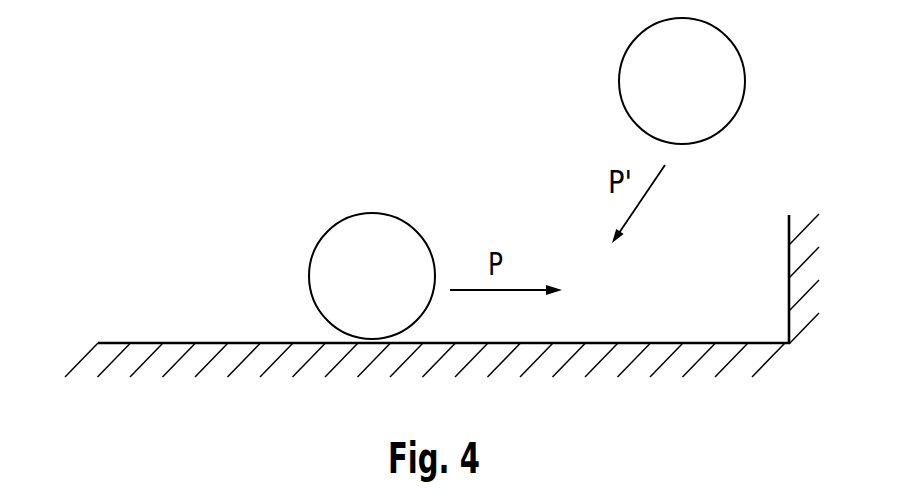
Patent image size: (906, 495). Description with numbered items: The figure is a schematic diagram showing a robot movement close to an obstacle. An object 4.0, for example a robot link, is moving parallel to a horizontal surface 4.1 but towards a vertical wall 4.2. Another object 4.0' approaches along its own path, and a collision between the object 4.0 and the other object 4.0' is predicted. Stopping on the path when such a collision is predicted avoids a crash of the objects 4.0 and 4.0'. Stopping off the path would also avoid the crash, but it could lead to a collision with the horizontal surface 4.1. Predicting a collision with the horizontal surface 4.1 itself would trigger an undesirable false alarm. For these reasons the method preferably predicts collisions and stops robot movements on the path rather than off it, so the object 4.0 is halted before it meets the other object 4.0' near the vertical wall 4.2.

The object 4.0 is at (372, 276).
The another object 4.0' is at (682, 81).
The horizontal surface 4.1 is at (202, 343).
The vertical wall 4.2 is at (789, 285).